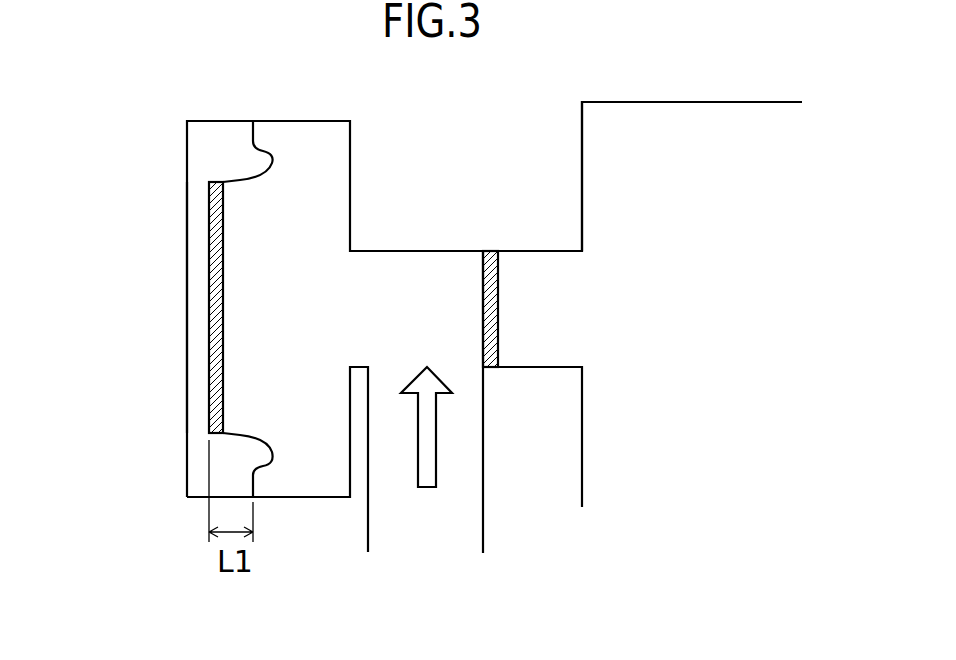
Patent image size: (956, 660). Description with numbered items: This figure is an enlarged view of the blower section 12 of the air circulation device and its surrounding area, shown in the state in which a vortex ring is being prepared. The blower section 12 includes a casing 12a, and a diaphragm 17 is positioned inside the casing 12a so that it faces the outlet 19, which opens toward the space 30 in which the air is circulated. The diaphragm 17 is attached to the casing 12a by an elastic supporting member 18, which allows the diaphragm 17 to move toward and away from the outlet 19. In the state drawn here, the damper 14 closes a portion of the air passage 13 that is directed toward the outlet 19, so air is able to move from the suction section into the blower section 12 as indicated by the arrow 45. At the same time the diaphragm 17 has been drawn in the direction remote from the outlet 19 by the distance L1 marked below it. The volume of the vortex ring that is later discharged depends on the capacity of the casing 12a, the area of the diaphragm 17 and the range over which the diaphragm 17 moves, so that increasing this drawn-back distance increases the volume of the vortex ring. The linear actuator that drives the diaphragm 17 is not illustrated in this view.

The blower section 12 is at (137, 283).
The casing 12a is at (312, 121).
The diaphragm 17 is at (209, 218).
The elastic supporting member 18 is at (250, 173).
The damper 14 is at (483, 282).
The air passage 13 is at (540, 251).
The space 30 is at (707, 102).
The outlet 19 is at (580, 310).
The arrow 45 is at (427, 490).